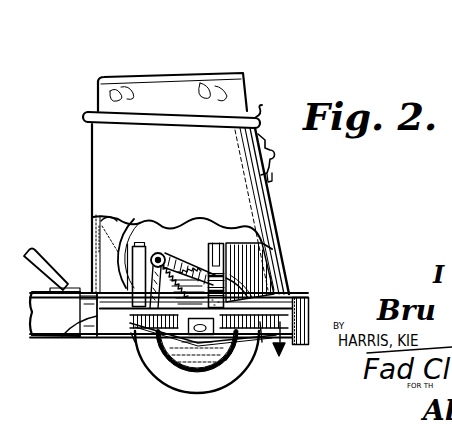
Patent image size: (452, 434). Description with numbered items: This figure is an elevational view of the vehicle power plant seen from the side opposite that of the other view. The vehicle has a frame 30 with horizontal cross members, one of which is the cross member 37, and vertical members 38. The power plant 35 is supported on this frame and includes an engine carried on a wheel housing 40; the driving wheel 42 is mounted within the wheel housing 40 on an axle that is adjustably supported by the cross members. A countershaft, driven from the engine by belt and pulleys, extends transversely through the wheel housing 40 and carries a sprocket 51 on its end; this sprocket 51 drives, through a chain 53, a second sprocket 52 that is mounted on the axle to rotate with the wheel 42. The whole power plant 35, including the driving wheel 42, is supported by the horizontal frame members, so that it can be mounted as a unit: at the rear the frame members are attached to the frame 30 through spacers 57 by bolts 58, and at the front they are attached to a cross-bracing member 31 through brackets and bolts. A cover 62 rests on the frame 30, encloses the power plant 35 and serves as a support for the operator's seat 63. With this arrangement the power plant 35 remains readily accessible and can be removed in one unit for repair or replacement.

The frame 30 is at (321, 289).
The cross-bracing member 31 is at (90, 332).
The power plant 35 is at (105, 259).
The cross member 37 is at (134, 333).
The vertical member 38 is at (223, 280).
The wheel housing 40 is at (233, 272).
The wheel 42 is at (162, 368).
The sprocket 51 is at (164, 243).
The sprocket 52 is at (197, 357).
The chain 53 is at (192, 243).
The spacer 57 is at (253, 370).
The bolt 58 is at (280, 355).
The cover 62 is at (97, 155).
The operator's seat 63 is at (199, 73).